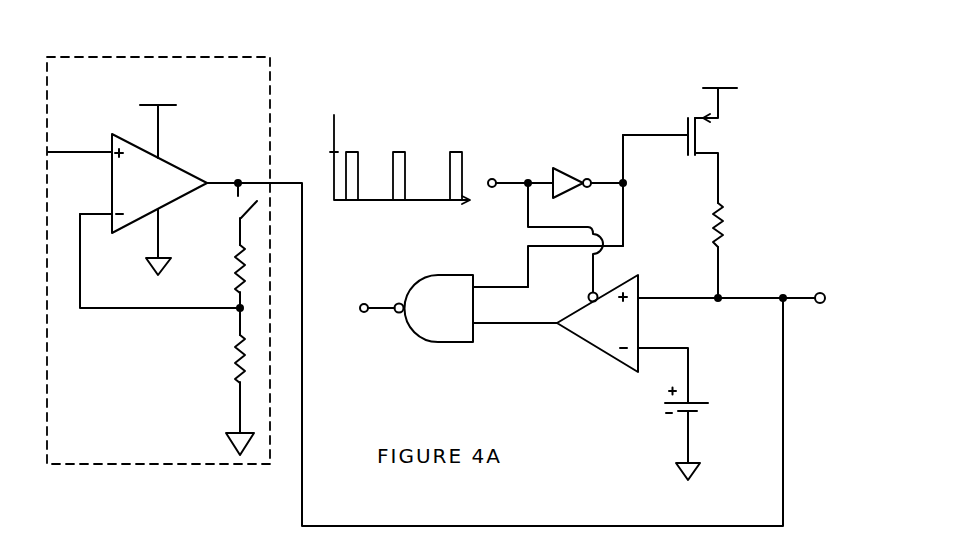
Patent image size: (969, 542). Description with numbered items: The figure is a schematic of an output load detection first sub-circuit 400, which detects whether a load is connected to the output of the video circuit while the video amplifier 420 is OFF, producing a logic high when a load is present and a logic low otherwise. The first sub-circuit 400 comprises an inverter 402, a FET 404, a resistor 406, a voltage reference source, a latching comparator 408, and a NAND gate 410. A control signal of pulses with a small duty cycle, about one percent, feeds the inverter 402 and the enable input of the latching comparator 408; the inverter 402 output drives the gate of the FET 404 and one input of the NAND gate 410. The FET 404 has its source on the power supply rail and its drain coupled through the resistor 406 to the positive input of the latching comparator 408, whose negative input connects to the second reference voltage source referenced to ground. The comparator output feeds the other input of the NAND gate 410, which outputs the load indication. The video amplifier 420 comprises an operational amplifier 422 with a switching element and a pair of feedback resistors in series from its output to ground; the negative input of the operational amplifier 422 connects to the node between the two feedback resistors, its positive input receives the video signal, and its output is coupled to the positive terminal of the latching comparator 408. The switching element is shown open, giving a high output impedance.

The output load detection first sub-circuit 400 is at (642, 74).
The inverter 402 is at (567, 166).
The FET 404 is at (712, 141).
The resistor 406 is at (726, 219).
The latching comparator 408 is at (590, 344).
The NAND gate 410 is at (415, 343).
The video amplifier 420 is at (224, 50).
The operational amplifier 422 is at (168, 161).